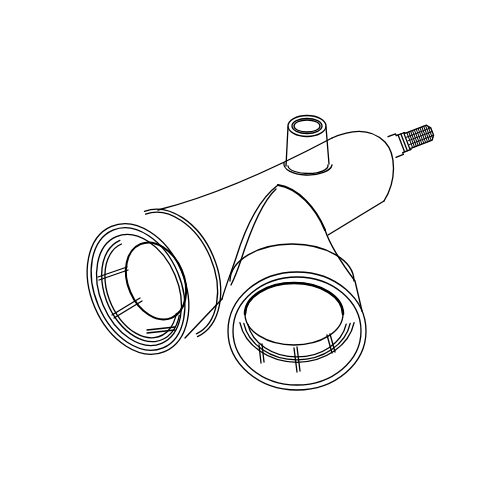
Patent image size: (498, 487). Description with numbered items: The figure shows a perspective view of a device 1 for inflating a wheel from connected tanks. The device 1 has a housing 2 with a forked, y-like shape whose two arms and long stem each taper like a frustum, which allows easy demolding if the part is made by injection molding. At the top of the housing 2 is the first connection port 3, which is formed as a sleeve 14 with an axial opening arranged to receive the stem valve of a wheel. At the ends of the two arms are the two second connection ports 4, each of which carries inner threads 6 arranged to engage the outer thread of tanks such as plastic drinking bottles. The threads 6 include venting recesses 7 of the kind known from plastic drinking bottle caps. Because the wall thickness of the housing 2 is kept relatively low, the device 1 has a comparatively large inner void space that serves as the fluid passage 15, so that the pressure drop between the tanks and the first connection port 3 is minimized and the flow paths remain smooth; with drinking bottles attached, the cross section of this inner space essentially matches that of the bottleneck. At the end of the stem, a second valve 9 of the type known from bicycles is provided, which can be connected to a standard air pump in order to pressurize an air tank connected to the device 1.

The device 1 is at (133, 80).
The housing 2 is at (218, 200).
The first connection port 3 is at (308, 130).
The second connection ports 4 is at (107, 226).
The inner threads 6 is at (127, 343).
The venting recesses 7 is at (115, 315).
The second valve 9 is at (422, 127).
The sleeve 14 is at (295, 152).
The fluid passage 15 is at (330, 372).